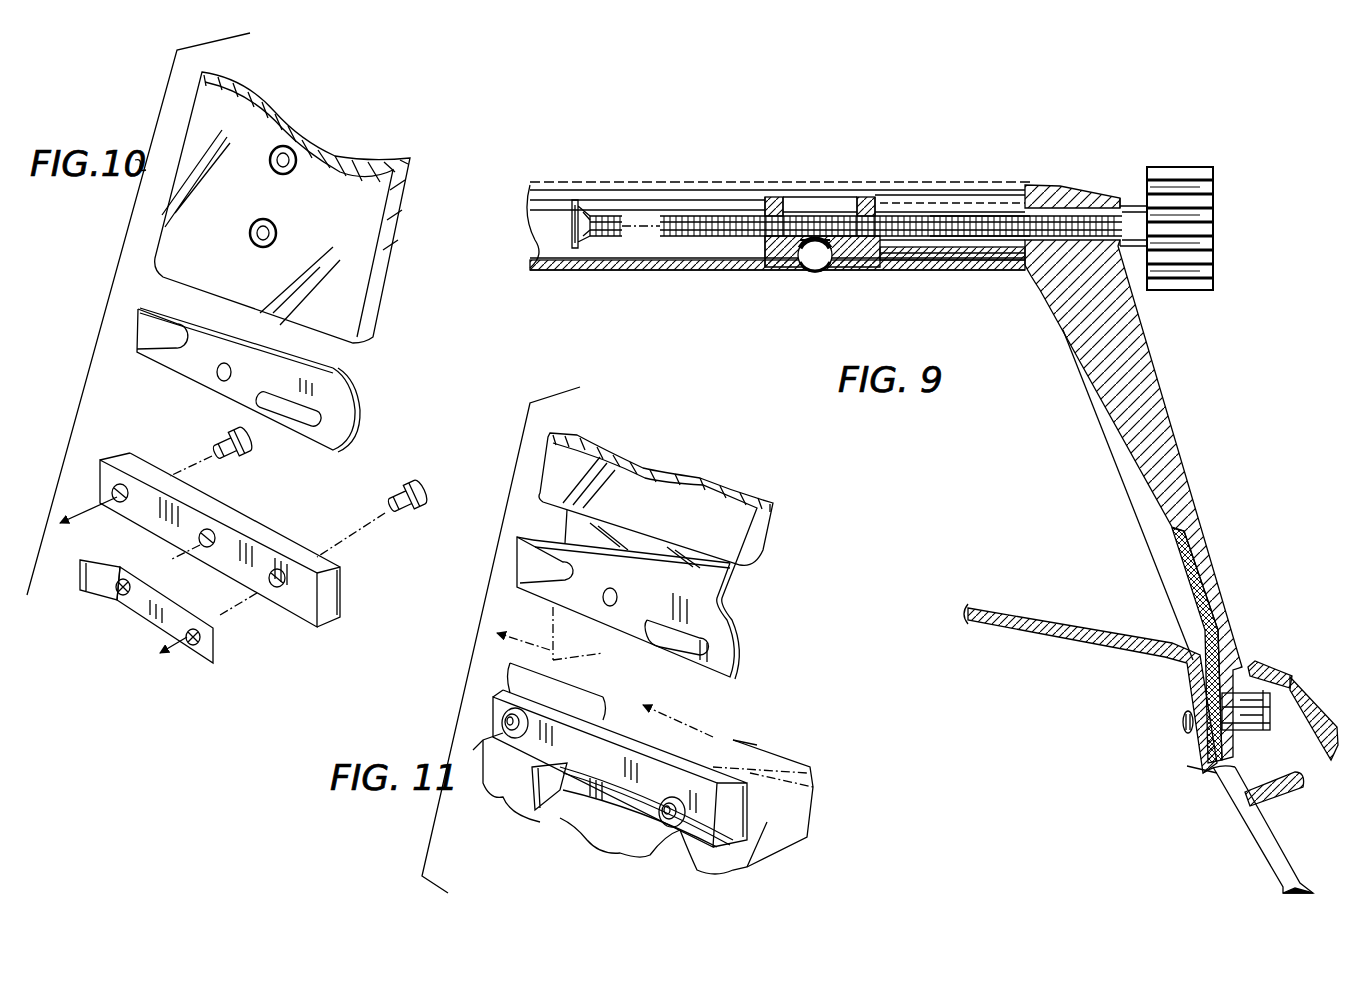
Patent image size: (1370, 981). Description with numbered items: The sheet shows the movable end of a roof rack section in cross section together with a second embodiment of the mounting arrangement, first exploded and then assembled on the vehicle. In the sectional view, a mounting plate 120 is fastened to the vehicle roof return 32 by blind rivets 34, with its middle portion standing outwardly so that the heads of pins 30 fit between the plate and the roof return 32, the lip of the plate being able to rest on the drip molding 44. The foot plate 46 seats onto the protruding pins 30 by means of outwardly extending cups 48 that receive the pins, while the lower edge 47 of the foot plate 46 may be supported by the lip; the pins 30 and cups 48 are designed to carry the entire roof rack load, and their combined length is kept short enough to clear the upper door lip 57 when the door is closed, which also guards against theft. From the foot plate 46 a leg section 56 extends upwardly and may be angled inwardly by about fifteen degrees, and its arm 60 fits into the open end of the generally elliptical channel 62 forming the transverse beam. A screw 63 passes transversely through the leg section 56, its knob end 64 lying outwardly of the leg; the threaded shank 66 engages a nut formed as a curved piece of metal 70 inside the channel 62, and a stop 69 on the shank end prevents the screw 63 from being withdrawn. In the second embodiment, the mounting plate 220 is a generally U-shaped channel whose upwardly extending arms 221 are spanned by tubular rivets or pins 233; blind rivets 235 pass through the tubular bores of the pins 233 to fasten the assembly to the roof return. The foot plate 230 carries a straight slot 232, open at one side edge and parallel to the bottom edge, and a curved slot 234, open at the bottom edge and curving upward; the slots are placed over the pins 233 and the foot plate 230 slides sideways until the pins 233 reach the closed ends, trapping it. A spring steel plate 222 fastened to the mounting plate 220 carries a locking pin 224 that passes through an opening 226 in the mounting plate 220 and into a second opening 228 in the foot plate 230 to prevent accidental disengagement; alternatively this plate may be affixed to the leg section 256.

In FIG. 9, the pin 30 is at (1261, 728).
In FIG. 9, the vehicle roof return 32 is at (1188, 678).
In FIG. 9, the blind rivet 34 is at (1183, 725).
In FIG. 9, the drip molding 44 is at (1290, 792).
In FIG. 9, the foot plate 46 is at (1186, 553).
In FIG. 9, the lower edge of the foot plate 47 is at (1247, 768).
In FIG. 9, the cup 48 is at (1294, 686).
In FIG. 9, the leg section 56 is at (1153, 420).
In FIG. 9, the upper door lip 57 is at (1254, 666).
In FIG. 9, the arm 60 is at (973, 255).
In FIG. 9, the elliptical channel 62 is at (630, 272).
In FIG. 9, the screw 63 is at (943, 220).
In FIG. 9, the knob end 64 is at (1177, 178).
In FIG. 9, the threaded shank 66 is at (708, 222).
In FIG. 9, the stop 69 is at (577, 204).
In FIG. 9, the curved piece of metal 70 is at (760, 266).
In FIG. 9, the mounting plate 120 is at (1203, 772).
In FIG. 10, the mounting plate 220 is at (103, 463).
In FIG. 11, the mounting plate 220 is at (795, 768).
In FIG. 10, the upwardly extending arms 221 is at (227, 507).
In FIG. 10, the spring steel plate 222 is at (160, 613).
In FIG. 11, the spring steel plate 222 is at (607, 792).
In FIG. 10, the locking pin 224 is at (147, 573).
In FIG. 11, the locking pin 224 is at (587, 753).
In FIG. 10, the opening 226 is at (203, 545).
In FIG. 10, the second opening 228 is at (218, 372).
In FIG. 11, the second opening 228 is at (610, 588).
In FIG. 10, the foot plate 230 is at (340, 433).
In FIG. 11, the foot plate 230 is at (740, 657).
In FIG. 10, the straight slot 232 is at (157, 340).
In FIG. 11, the straight slot 232 is at (518, 553).
In FIG. 10, the tubular rivets or pins 233 is at (220, 433).
In FIG. 11, the tubular rivets or pins 233 is at (693, 787).
In FIG. 10, the curved slot 234 is at (267, 418).
In FIG. 11, the curved slot 234 is at (650, 640).
In FIG. 11, the blind rivet 235 is at (510, 820).
In FIG. 10, the leg section 256 is at (382, 272).